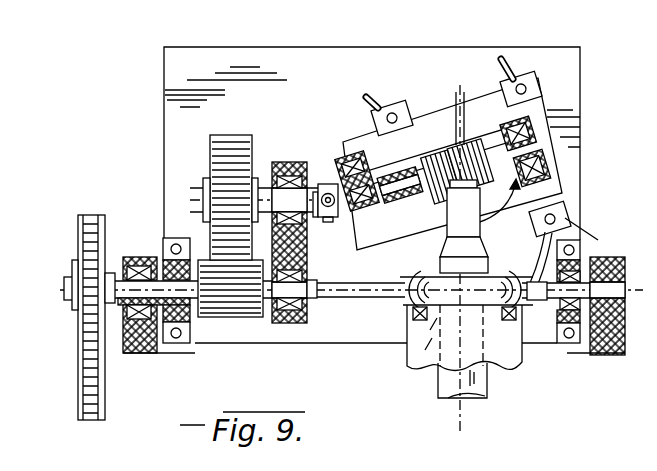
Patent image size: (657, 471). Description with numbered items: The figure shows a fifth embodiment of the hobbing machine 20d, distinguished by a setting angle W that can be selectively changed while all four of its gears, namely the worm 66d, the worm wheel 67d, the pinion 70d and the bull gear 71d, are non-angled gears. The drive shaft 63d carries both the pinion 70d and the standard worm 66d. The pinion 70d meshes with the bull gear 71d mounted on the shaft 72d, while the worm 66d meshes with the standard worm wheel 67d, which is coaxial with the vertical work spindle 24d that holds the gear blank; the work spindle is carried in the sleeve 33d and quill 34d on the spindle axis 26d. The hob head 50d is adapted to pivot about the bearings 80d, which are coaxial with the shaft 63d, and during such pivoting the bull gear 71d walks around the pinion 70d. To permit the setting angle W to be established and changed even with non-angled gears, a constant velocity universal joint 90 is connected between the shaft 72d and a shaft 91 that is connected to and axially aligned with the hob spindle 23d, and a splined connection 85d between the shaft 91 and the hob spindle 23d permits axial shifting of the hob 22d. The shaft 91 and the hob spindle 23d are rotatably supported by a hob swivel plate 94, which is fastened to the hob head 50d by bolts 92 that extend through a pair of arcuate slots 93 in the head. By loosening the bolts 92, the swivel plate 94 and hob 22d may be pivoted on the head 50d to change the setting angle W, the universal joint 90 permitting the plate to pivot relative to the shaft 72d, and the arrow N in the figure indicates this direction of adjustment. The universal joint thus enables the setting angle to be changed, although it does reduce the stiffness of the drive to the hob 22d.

The hobbing machine 20d is at (156, 86).
The bull gear 71d is at (207, 162).
The shaft 63d is at (137, 283).
The shaft 72d is at (268, 162).
The pinion 70d is at (232, 320).
The constant velocity universal joint 90 is at (320, 176).
The shaft 91 is at (352, 158).
The arcuate slots 93 is at (367, 96).
The bolts 92 is at (398, 104).
The hob 22d is at (456, 135).
The hob swivel plate 94 is at (485, 112).
The hob head 50d is at (550, 102).
The hob spindle 23d is at (409, 168).
The splined connection 85d is at (403, 196).
The direction arrow N is at (535, 212).
The work spindle 24d is at (447, 265).
The worm wheel 67d is at (403, 300).
The worm 66d is at (410, 344).
The hub 33d is at (412, 372).
The shaft 26d is at (459, 419).
The shaft end 34d is at (478, 383).
The bearings 80d is at (140, 355).